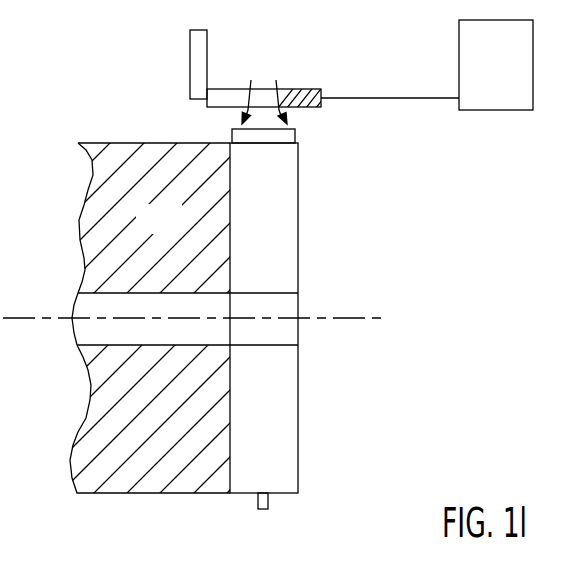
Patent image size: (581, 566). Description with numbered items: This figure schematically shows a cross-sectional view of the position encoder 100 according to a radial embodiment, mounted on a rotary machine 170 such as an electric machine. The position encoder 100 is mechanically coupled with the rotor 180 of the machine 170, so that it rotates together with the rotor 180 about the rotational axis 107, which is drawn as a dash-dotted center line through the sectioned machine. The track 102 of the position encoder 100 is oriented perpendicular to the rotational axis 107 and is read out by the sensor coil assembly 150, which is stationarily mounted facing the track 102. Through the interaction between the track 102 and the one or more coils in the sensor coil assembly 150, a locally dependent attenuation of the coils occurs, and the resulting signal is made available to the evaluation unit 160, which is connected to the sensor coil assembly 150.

The position encoder 100 is at (312, 496).
The track 102 is at (295, 135).
The rotational axis 107 is at (60, 318).
The sensor coil assembly 150 is at (336, 115).
The evaluation unit 160 is at (513, 75).
The rotary machine 170 is at (66, 147).
The rotor 180 is at (177, 230).